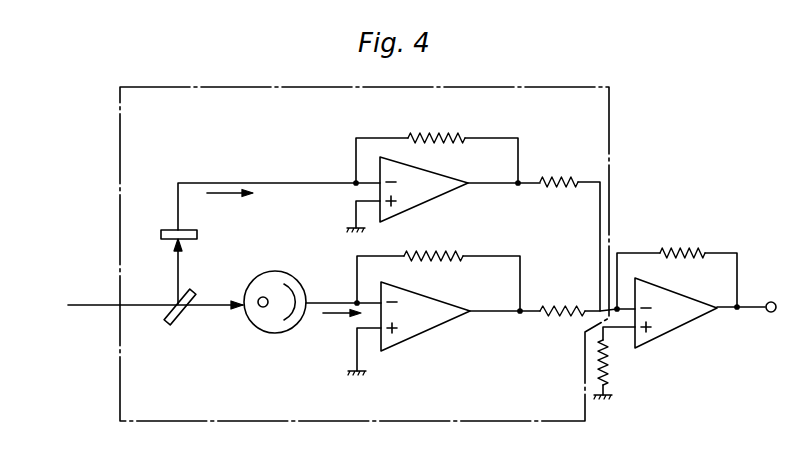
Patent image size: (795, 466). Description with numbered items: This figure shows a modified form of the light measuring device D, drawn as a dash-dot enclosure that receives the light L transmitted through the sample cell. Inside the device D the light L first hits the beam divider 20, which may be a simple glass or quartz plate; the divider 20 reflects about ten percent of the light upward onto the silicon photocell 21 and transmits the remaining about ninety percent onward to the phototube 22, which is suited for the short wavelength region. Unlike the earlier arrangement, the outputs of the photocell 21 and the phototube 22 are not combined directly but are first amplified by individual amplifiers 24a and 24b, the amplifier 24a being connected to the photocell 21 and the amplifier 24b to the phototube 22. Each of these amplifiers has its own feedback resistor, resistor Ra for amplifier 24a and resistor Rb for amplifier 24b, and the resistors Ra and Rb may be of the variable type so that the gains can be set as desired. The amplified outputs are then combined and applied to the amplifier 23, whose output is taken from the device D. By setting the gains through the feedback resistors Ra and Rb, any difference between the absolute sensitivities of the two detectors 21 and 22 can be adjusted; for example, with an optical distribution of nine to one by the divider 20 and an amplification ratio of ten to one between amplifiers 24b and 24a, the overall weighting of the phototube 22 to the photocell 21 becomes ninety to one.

The light L is at (78, 310).
The beam divider 20 is at (184, 313).
The silicon photocell 21 is at (162, 231).
The phototube 22 is at (265, 333).
The amplifier 23 is at (672, 333).
The amplifier 24a is at (433, 197).
The amplifier 24b is at (432, 330).
The feedback resistor Ra is at (458, 128).
The feedback resistor Rb is at (462, 247).
The light measuring device D is at (578, 86).